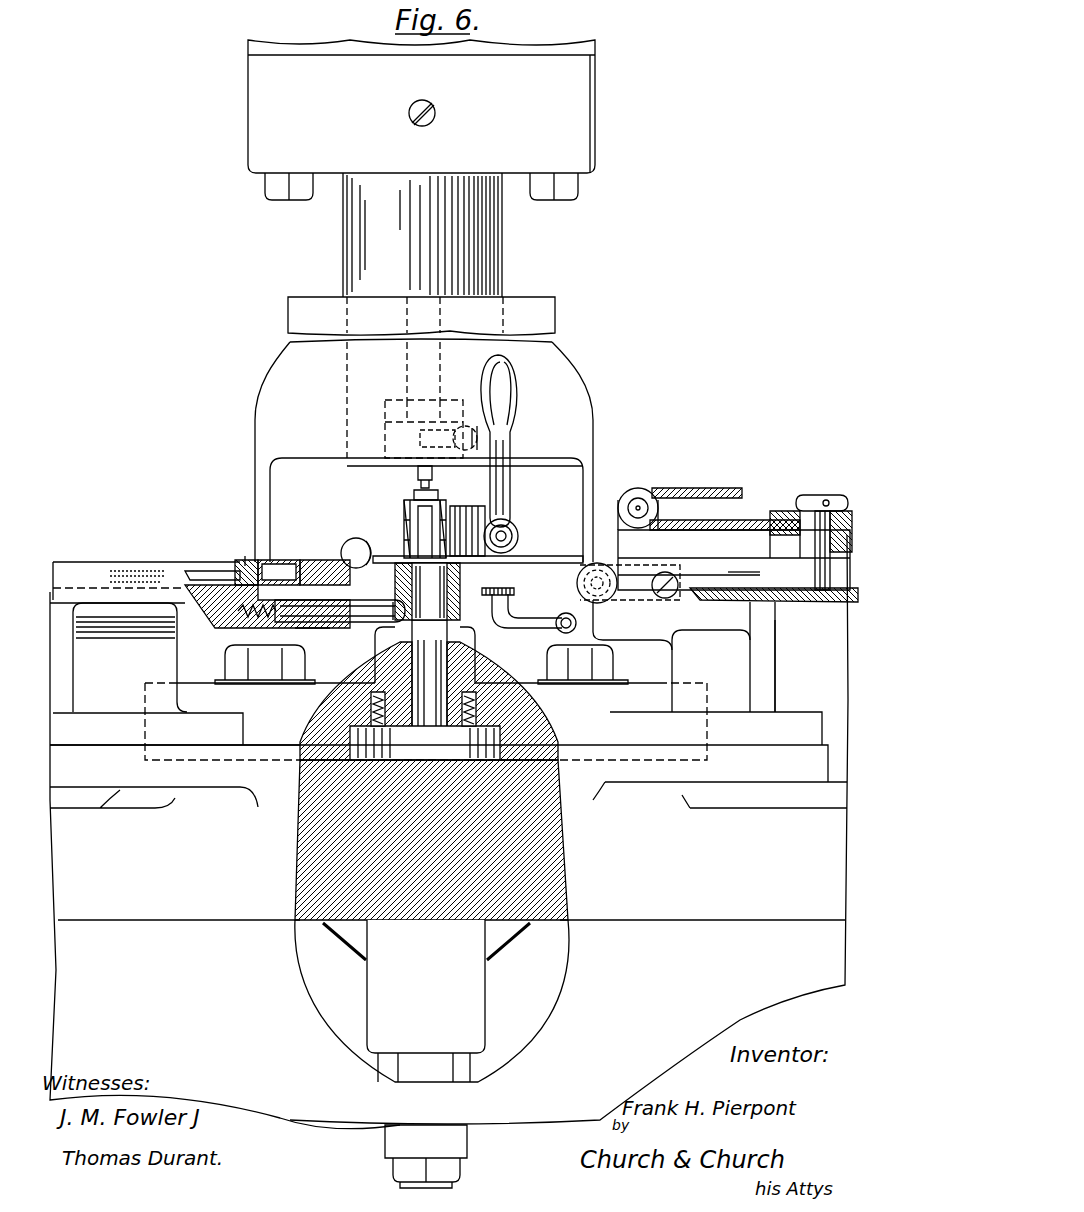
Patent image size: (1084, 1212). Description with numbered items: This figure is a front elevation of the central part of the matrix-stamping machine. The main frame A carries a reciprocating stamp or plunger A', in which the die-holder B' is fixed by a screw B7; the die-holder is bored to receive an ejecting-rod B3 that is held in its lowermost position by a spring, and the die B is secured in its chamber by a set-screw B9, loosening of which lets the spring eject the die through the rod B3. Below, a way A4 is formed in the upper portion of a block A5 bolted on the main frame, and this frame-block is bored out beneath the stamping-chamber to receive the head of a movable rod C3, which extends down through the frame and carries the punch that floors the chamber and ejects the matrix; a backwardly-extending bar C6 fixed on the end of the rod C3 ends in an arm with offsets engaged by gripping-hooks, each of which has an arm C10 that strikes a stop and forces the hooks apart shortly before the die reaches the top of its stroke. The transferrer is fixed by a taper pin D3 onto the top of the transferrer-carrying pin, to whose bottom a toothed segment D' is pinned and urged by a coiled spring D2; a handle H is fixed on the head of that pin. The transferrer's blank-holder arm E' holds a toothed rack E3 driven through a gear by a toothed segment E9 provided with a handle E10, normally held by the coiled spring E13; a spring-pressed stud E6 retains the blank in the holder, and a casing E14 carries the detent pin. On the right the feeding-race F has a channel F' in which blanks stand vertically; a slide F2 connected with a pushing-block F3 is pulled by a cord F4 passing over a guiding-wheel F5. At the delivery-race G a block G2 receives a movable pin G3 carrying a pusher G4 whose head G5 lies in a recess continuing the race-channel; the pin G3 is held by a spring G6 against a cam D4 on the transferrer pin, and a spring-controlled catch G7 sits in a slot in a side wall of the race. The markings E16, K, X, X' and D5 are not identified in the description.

The reciprocating stamp A' is at (436, 120).
The screw B7 is at (436, 113).
The die-holder B' is at (441, 235).
The way A4 is at (345, 388).
The ejecting-rod B3 is at (420, 378).
The set-screw B9 is at (500, 438).
The handle E10 is at (516, 414).
The knob E16 is at (515, 503).
The die B is at (404, 480).
The toothed rack E3 is at (438, 493).
The coiled spring E13 is at (451, 517).
The stud E6 is at (475, 592).
The casing E14 is at (375, 560).
The handle H is at (560, 548).
The pipe cap K is at (512, 583).
The delivery-race G is at (88, 563).
The spring-controlled catch G7 is at (193, 572).
The spring G6 is at (222, 585).
The axis mark X' is at (238, 548).
The pusher-head G5 is at (258, 568).
The pusher G4 is at (280, 572).
The blank-holder arm E' is at (325, 559).
The toothed segment E9 is at (350, 578).
The taper pin D3 is at (462, 580).
The guiding-wheel F5 is at (640, 490).
The cord F4 is at (709, 491).
The channel F' is at (734, 530).
The slide F2 is at (832, 495).
The axis mark X is at (744, 563).
The pushing-block F3 is at (832, 590).
The feeding-race F is at (680, 637).
The block G2 is at (312, 637).
The movable pin G3 is at (393, 612).
The cam D4 is at (410, 622).
The shaft D5 is at (470, 652).
The frame-block A5 is at (478, 655).
The toothed segment D' is at (429, 701).
The coiled spring D2 is at (355, 718).
The main frame A is at (449, 832).
The movable rod C3 is at (440, 1070).
The arm C10 is at (340, 940).
The backwardly-extending bar C6 is at (455, 1168).